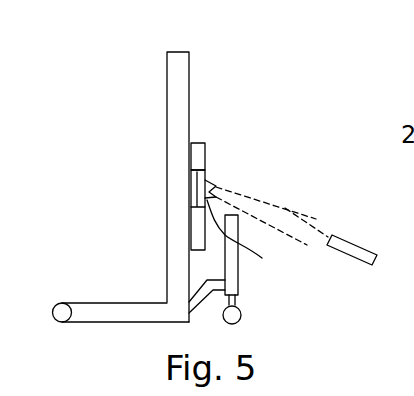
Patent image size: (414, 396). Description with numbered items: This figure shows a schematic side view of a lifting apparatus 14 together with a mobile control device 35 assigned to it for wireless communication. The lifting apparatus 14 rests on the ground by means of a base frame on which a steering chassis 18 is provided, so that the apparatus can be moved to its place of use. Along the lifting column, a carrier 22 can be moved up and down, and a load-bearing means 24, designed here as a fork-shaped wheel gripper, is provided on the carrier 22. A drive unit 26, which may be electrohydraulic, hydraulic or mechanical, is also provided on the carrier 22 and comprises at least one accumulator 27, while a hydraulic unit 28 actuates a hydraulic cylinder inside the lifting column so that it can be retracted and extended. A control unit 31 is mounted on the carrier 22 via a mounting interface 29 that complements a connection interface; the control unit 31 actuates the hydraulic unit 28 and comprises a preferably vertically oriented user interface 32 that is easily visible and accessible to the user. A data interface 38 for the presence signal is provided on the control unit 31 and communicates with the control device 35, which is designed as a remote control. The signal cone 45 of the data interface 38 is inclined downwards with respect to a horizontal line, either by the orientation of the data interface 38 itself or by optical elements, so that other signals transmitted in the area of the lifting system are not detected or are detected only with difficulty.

The lifting apparatus 14 is at (104, 212).
The steering chassis 18 is at (252, 315).
The carrier 22 is at (149, 94).
The load-bearing means 24 is at (124, 278).
The drive unit 26 is at (197, 131).
The accumulator 27 is at (197, 157).
The hydraulic unit 28 is at (197, 230).
The mounting interface 29 is at (197, 180).
The control unit 31 is at (205, 180).
The user interface 32 is at (242, 256).
The control device 35 is at (362, 239).
The data interface 38 is at (218, 186).
The signal cone 45 is at (285, 208).